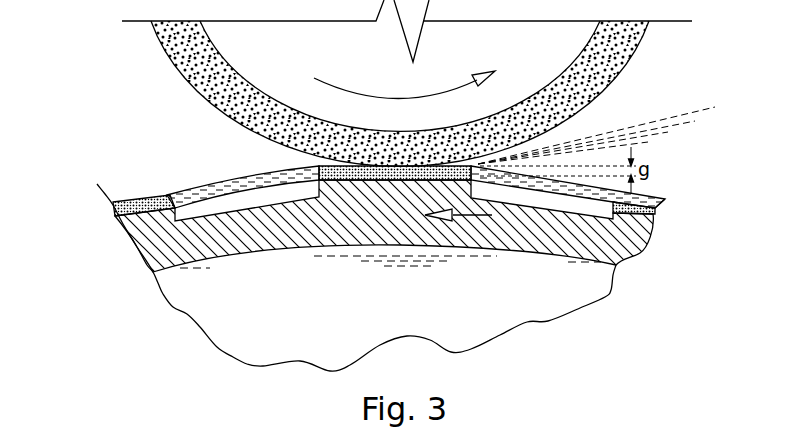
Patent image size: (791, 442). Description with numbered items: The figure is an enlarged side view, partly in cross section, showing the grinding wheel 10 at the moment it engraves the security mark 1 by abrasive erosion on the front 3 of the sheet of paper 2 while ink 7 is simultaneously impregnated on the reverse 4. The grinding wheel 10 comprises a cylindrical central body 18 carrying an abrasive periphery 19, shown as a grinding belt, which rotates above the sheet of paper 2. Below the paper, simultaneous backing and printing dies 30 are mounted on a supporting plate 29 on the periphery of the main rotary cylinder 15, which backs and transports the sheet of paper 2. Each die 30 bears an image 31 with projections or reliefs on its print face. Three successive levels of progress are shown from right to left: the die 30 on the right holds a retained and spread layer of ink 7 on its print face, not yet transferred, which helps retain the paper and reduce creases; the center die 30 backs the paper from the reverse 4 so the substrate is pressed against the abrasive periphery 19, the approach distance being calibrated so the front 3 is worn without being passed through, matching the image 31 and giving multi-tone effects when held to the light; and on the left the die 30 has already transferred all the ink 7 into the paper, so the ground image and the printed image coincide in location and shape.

The security mark 1 is at (127, 197).
The sheet of paper 2 is at (178, 181).
The front 3 is at (664, 200).
The reverse 4 is at (656, 207).
The ink 7 is at (127, 240).
The grinding wheel 10 is at (157, 65).
The main rotary cylinder 15 is at (281, 314).
The central body 18 is at (276, 56).
The abrasive periphery 19 is at (628, 64).
The supporting plate 29 is at (222, 258).
The simultaneous backing and printing die 30 is at (397, 181).
The image 31 is at (185, 198).